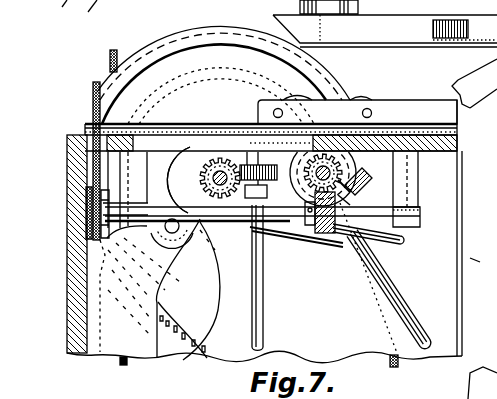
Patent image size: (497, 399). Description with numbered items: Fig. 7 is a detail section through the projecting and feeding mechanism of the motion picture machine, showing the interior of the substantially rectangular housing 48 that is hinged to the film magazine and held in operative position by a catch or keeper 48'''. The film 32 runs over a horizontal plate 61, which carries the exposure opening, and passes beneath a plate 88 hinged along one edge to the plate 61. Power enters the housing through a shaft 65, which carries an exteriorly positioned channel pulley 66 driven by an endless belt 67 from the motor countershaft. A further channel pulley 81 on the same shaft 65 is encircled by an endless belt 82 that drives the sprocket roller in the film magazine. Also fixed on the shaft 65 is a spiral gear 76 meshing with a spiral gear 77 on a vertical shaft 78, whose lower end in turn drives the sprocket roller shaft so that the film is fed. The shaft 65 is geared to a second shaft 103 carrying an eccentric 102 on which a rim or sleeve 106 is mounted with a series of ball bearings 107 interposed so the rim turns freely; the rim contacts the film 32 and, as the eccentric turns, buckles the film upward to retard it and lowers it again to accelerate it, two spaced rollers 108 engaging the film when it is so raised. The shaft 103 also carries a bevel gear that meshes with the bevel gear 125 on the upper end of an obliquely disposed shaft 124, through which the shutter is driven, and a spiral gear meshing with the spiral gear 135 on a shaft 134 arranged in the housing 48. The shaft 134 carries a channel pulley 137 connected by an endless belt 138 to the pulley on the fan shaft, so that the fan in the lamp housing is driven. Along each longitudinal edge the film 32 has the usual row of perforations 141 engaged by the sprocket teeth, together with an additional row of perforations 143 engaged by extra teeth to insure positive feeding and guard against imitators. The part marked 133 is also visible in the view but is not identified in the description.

The catch or keeper 48''' is at (78, 13).
The channel pulley 81 is at (163, 83).
The endless belt 82 is at (110, 52).
The channel pulley 66 is at (205, 40).
The endless belt 138 is at (97, 98).
The shaft 65 is at (218, 158).
The spiral gear 76 is at (197, 172).
The top plate 133 is at (340, 44).
The rollers 108 is at (318, 97).
The plate 88 is at (407, 108).
The shaft 103 is at (323, 168).
The rim or sleeve 106 is at (281, 142).
The horizontal plate 61 is at (458, 141).
The ball bearings 107 is at (352, 163).
The bevel gear 125 is at (369, 176).
The shaft 134 is at (352, 188).
The eccentric 102 is at (483, 251).
The channel pulley 137 is at (163, 289).
The perforations 143 is at (160, 318).
The perforations 141 is at (192, 343).
The housing 48 is at (73, 258).
The endless belt 67 is at (123, 365).
The film 32 is at (182, 352).
The spiral gear 77 is at (294, 250).
The spiral gear 135 is at (328, 240).
The obliquely disposed shaft 124 is at (399, 309).
The vertical shaft 78 is at (265, 336).